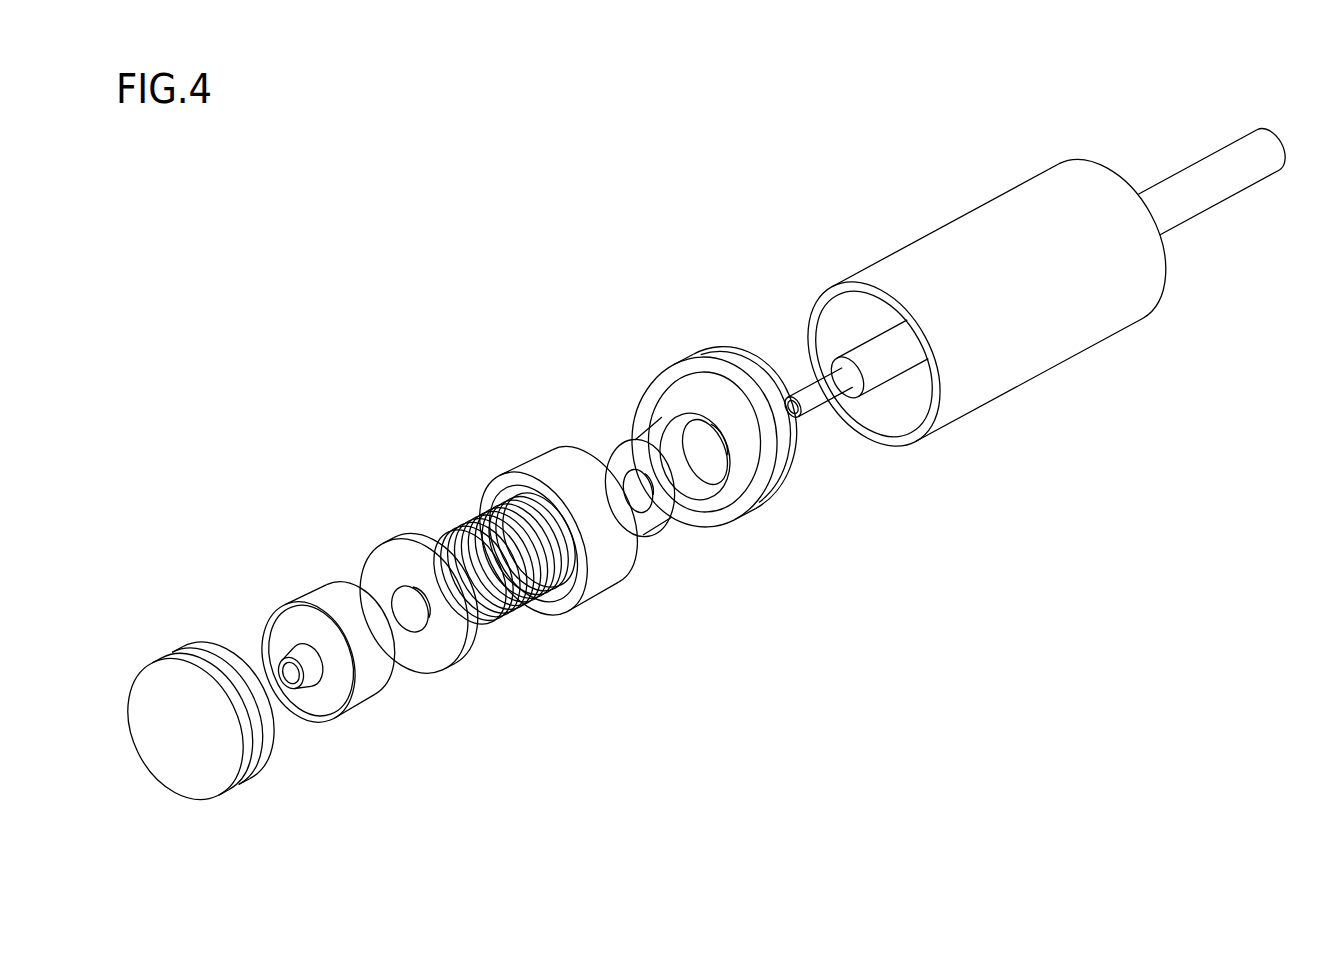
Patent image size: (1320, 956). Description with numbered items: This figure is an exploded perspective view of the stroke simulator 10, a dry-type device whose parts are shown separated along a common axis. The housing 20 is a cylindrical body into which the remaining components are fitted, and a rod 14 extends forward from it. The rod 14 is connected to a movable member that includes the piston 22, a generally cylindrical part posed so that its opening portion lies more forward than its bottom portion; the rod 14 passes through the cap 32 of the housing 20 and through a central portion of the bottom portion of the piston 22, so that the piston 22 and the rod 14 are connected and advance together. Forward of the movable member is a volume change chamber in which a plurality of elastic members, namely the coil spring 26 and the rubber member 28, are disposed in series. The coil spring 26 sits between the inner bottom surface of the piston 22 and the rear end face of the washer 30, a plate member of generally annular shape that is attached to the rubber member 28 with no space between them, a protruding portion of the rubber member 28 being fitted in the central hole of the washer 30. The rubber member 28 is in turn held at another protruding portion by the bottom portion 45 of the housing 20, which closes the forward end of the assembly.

The stroke simulator 10 is at (784, 194).
The rod 14 is at (1196, 193).
The housing 20 is at (947, 252).
The piston 22 is at (562, 476).
The coil spring 26 is at (463, 528).
The rubber member 28 is at (330, 600).
The washer 30 is at (415, 538).
The cap 32 is at (646, 365).
The bottom portion 45 is at (192, 660).